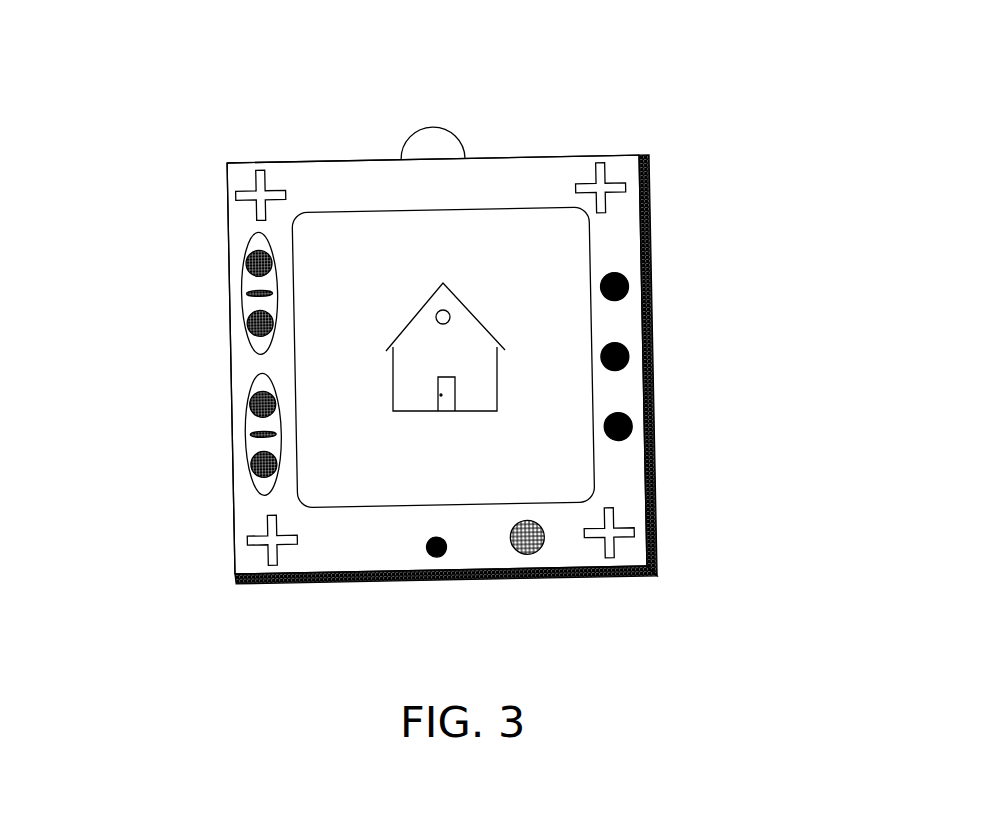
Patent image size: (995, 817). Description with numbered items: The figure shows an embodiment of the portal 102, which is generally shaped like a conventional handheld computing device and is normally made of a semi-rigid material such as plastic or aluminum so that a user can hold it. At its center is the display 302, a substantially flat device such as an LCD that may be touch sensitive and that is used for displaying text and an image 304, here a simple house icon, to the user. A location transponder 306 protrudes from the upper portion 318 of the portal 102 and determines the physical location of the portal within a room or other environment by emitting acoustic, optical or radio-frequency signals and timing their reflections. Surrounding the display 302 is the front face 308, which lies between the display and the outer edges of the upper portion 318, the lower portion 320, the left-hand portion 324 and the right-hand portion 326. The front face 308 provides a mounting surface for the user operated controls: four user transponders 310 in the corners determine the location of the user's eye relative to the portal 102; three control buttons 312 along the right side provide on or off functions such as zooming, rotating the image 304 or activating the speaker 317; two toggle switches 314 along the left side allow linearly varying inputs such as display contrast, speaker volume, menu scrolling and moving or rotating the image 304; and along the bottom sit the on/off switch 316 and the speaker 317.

The portal 102 is at (398, 34).
The display 302 is at (467, 491).
The image 304 is at (423, 300).
The location transponder 306 is at (417, 122).
The front face 308 is at (528, 187).
The user transponders 310 is at (252, 207).
The control buttons 312 is at (633, 402).
The toggle switches 314 is at (240, 340).
The on/off switch 316 is at (425, 558).
The speaker 317 is at (515, 552).
The upper portion 318 is at (307, 147).
The lower portion 320 is at (308, 595).
The left-hand portion 324 is at (220, 542).
The right-hand portion 326 is at (678, 547).